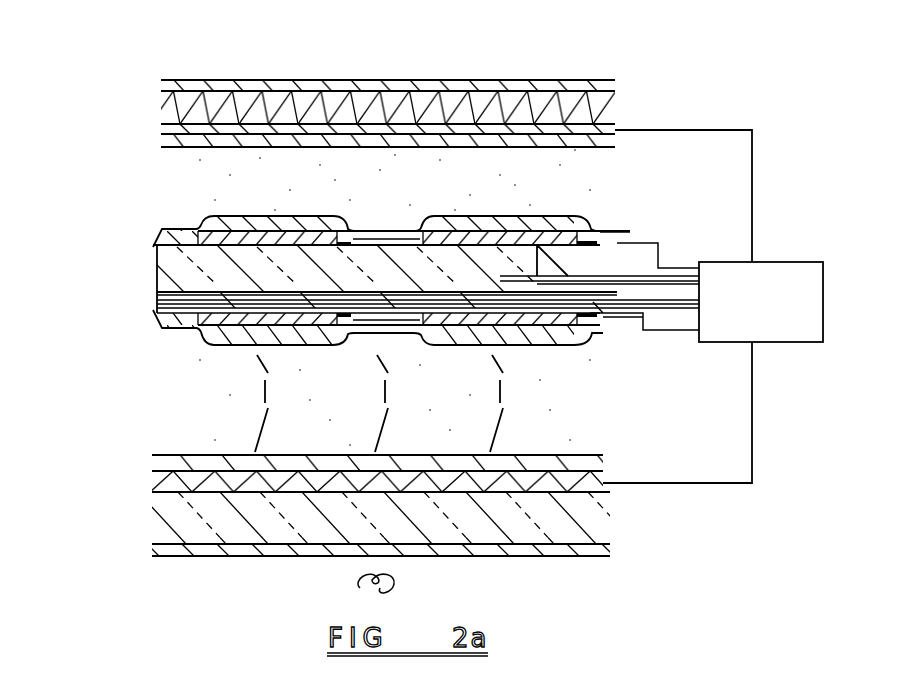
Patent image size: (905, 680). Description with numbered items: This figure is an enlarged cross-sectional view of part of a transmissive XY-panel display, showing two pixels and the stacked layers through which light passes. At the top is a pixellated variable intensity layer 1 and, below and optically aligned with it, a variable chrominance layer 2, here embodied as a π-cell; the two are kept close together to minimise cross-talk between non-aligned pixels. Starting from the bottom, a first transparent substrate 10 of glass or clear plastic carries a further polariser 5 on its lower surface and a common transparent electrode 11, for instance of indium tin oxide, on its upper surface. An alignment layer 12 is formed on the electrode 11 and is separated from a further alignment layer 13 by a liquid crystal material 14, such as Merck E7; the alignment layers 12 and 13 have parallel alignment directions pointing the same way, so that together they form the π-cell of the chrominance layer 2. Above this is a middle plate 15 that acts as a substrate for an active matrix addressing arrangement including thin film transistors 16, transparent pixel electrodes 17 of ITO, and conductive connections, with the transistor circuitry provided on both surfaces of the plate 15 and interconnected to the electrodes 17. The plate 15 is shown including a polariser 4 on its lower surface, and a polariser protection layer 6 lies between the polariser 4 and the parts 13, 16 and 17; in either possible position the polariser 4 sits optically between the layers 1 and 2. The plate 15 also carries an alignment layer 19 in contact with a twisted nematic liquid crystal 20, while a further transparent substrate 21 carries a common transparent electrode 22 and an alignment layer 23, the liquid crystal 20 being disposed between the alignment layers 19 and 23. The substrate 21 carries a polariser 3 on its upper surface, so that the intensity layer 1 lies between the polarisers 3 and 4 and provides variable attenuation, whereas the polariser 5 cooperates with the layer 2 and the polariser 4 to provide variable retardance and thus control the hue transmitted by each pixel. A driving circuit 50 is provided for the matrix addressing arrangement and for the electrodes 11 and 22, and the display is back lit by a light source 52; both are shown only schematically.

The pixellated variable intensity layer 1 is at (676, 171).
The variable chrominance layer 2 is at (676, 375).
The polariser 3 is at (217, 83).
The polariser 4 is at (165, 297).
The further polariser 5 is at (165, 549).
The polariser protection layer 6 is at (608, 304).
The first transparent substrate 10 is at (170, 522).
The common transparent electrode 11 is at (165, 480).
The alignment layer 12 is at (170, 462).
The further alignment layer 13 is at (165, 330).
The liquid crystal material 14 is at (200, 390).
The middle plate 15 is at (676, 256).
The thin film transistors 16 is at (400, 220).
The pixel electrodes 17 is at (215, 312).
The alignment layer 19 is at (197, 226).
The twisted nematic liquid crystal 20 is at (200, 186).
The further transparent substrate 21 is at (187, 110).
The common transparent electrode 22 is at (168, 130).
The alignment layer 23 is at (180, 150).
The driving circuit 50 is at (778, 320).
The light source 52 is at (395, 583).